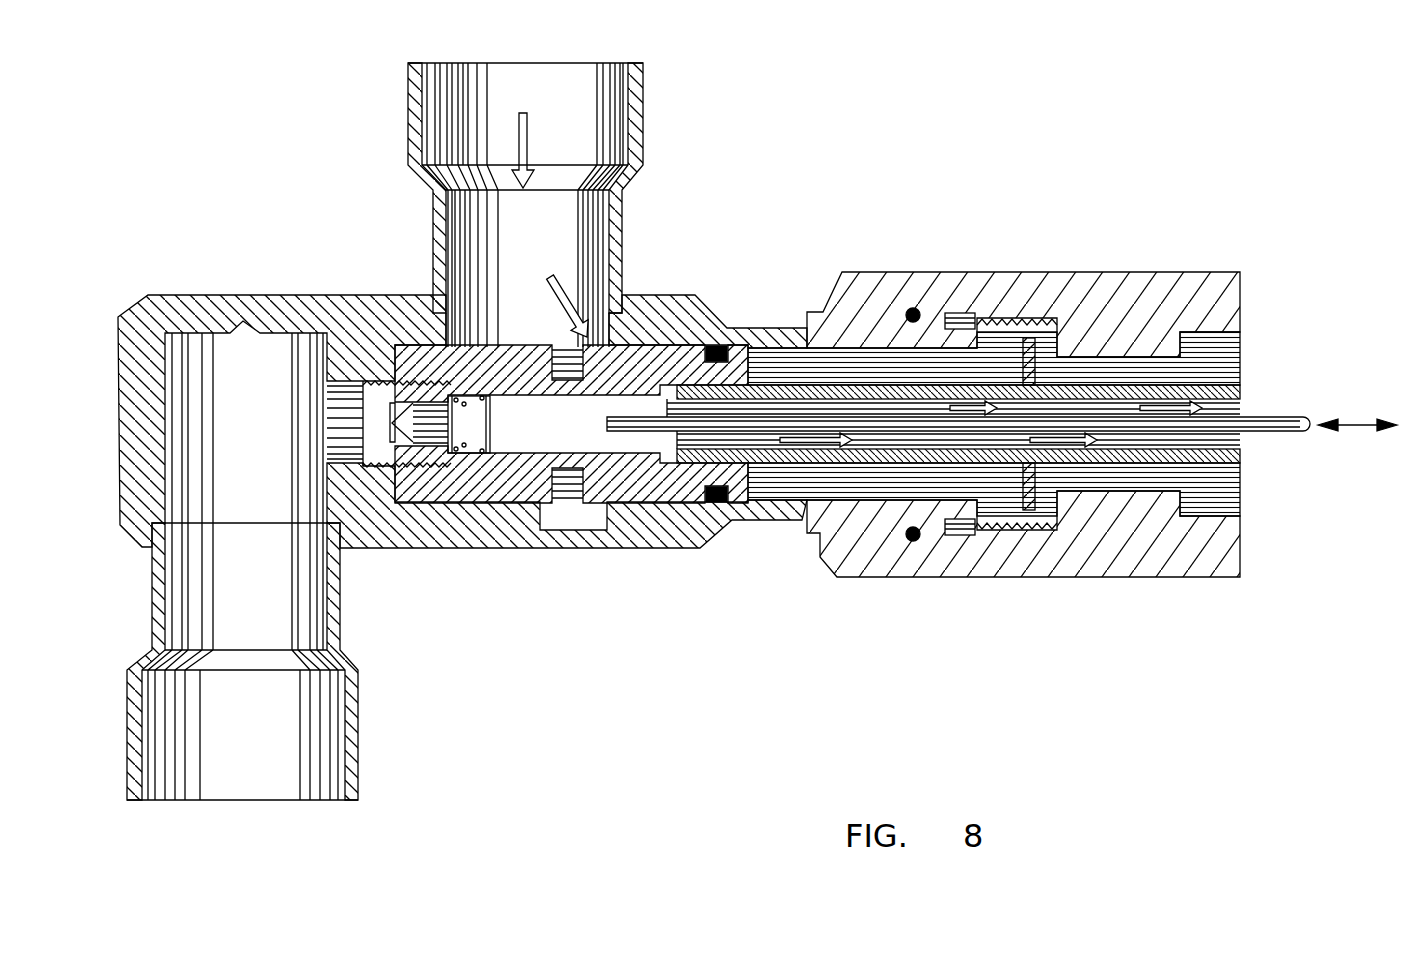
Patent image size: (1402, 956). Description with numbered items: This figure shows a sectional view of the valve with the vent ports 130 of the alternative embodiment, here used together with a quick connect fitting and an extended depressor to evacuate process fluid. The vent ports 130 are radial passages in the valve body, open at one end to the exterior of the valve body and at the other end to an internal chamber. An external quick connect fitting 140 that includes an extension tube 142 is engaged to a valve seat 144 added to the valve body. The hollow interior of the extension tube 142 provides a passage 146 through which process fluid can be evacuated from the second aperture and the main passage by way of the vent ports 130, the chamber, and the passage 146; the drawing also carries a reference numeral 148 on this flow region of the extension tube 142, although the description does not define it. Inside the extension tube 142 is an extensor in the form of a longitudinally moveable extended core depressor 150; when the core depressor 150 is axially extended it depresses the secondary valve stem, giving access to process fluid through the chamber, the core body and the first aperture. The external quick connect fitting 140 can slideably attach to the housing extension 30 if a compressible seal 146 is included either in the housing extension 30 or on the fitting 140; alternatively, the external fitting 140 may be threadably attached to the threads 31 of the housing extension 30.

The housing extension 30 is at (812, 524).
The threads 31 is at (1012, 525).
The vent ports 130 is at (615, 352).
The external quick connect fitting 140 is at (1128, 271).
The extension tube 142 is at (783, 387).
The valve seat 144 is at (697, 390).
The passage 146 is at (1243, 440).
The flow passage 148 is at (897, 443).
The extended core depressor 150 is at (673, 433).